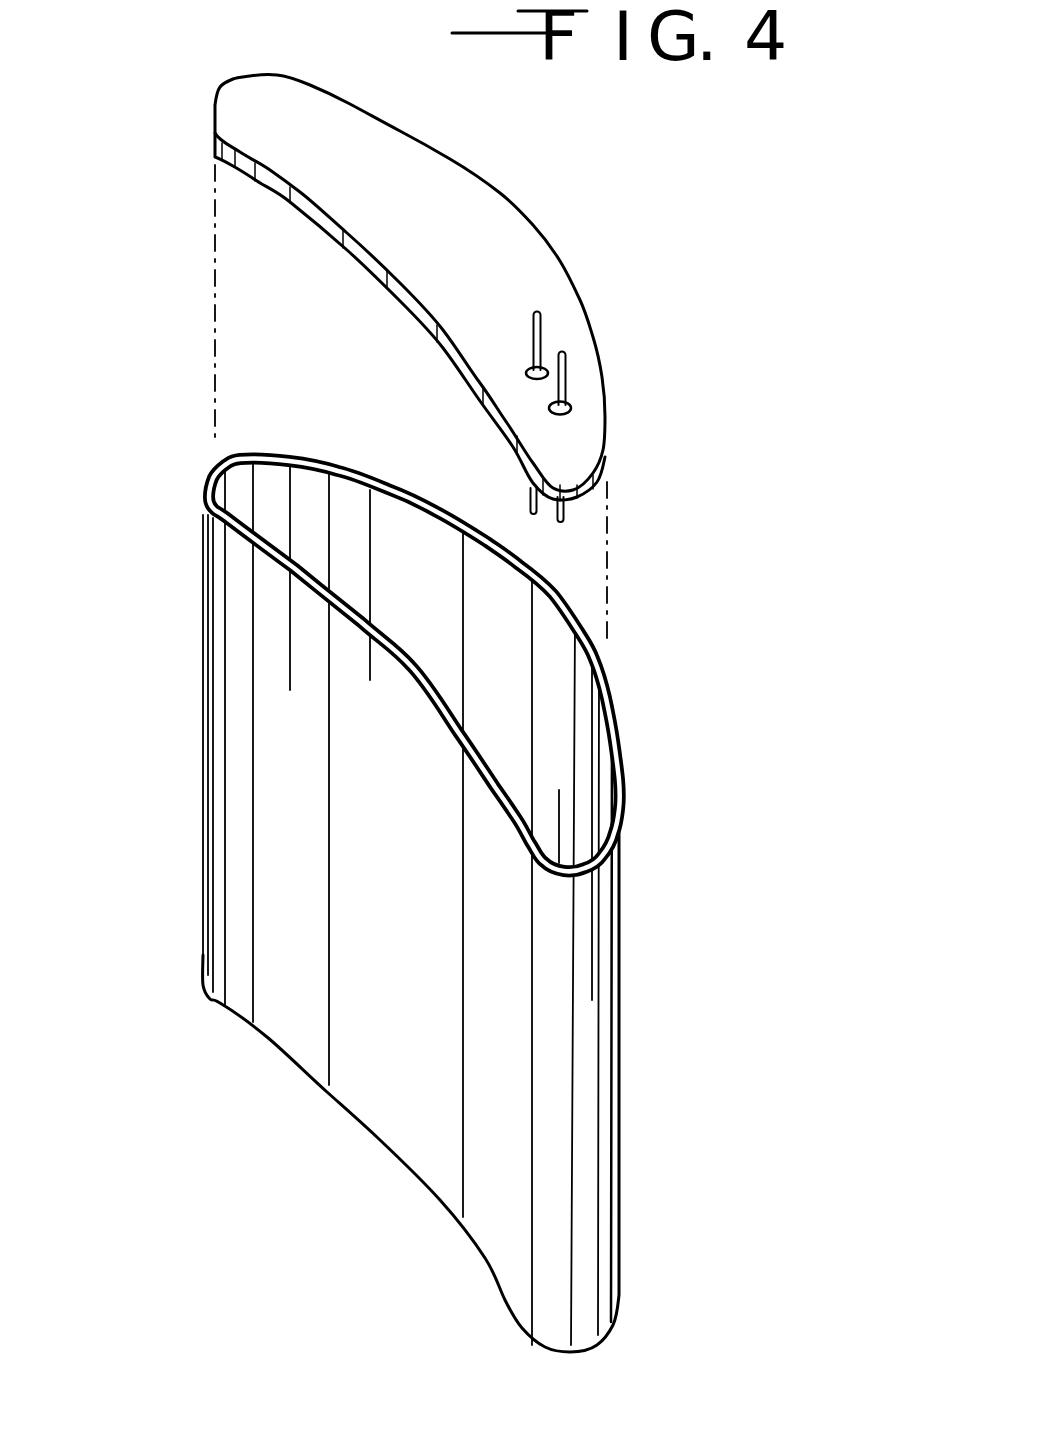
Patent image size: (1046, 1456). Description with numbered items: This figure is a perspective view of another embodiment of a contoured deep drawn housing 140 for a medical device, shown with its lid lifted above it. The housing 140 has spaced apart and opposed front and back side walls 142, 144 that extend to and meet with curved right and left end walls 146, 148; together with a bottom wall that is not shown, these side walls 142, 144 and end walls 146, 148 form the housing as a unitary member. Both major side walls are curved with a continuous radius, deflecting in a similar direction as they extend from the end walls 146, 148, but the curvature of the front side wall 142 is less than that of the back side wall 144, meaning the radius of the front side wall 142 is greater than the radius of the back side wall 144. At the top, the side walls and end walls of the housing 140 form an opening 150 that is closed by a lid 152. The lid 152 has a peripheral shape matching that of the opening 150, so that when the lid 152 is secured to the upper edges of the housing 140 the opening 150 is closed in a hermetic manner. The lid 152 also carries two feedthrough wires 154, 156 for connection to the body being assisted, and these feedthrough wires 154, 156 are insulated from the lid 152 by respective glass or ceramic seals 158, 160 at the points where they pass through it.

The contoured deep drawn housing 140 is at (462, 713).
The front side wall 142 is at (288, 960).
The back side wall 144 is at (567, 767).
The right end wall 146 is at (585, 985).
The left end wall 148 is at (213, 478).
The opening 150 is at (513, 700).
The lid 152 is at (443, 175).
The feedthrough wire 154 is at (565, 372).
The feedthrough wire 156 is at (547, 323).
The glass or ceramic seal 158 is at (575, 410).
The glass or ceramic seal 160 is at (527, 372).